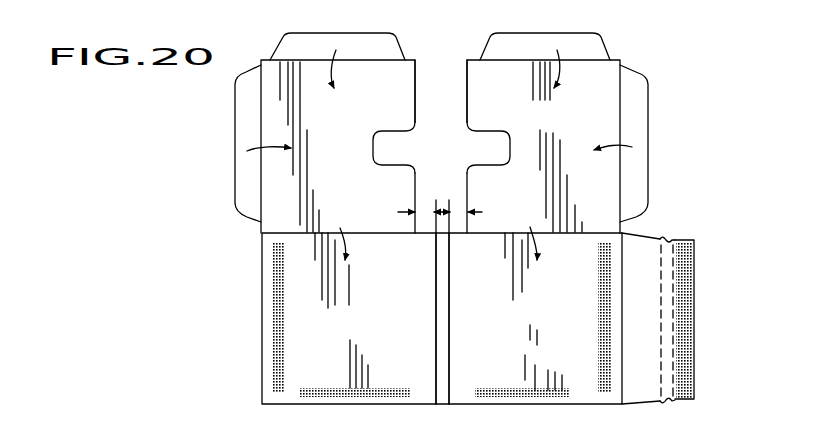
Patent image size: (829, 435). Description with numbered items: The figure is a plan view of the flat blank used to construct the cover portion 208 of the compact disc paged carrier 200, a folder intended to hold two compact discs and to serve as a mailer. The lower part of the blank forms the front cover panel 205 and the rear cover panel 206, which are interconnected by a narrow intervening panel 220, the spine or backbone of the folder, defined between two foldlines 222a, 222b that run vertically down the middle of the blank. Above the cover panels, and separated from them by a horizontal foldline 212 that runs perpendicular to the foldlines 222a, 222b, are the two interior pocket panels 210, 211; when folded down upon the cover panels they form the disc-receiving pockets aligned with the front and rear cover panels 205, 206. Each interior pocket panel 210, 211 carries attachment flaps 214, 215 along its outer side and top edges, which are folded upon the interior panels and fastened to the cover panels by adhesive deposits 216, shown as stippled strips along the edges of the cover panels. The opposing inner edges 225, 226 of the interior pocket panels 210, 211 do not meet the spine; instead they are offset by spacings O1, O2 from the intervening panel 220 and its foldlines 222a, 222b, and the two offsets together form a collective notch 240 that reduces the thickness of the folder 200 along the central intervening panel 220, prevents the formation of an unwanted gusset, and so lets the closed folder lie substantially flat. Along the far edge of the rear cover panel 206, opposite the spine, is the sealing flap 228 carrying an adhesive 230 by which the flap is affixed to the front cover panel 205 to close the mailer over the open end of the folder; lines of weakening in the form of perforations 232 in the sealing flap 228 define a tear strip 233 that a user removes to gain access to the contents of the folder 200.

The compact disc paged carrier 200 is at (246, 318).
The cover portion 208 is at (258, 358).
The interior pocket panel 210 is at (350, 126).
The interior pocket panel 211 is at (572, 127).
The foldline 212 is at (378, 235).
The attachment flap 214 is at (247, 132).
The attachment flap 215 is at (288, 52).
The adhesive deposit 216 is at (349, 390).
The intervening panel 220 is at (442, 321).
The foldline 222a is at (436, 357).
The foldline 222b is at (449, 356).
The inner edge 225 is at (415, 105).
The inner edge 226 is at (468, 92).
The sealing flap 228 is at (700, 260).
The adhesive 230 is at (680, 344).
The perforations 232 is at (670, 387).
The tear strip 233 is at (668, 242).
The collective notch 240 is at (437, 151).
The front cover panel 205 is at (368, 336).
The rear cover panel 206 is at (582, 301).
The offset O1 is at (415, 212).
The offset O2 is at (468, 212).